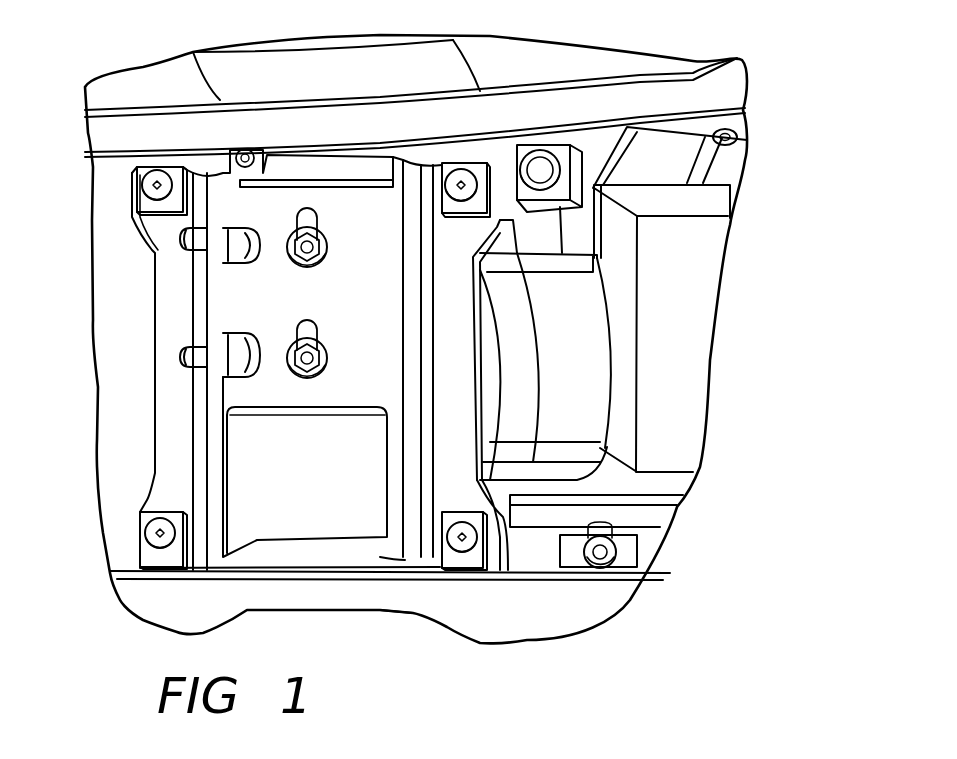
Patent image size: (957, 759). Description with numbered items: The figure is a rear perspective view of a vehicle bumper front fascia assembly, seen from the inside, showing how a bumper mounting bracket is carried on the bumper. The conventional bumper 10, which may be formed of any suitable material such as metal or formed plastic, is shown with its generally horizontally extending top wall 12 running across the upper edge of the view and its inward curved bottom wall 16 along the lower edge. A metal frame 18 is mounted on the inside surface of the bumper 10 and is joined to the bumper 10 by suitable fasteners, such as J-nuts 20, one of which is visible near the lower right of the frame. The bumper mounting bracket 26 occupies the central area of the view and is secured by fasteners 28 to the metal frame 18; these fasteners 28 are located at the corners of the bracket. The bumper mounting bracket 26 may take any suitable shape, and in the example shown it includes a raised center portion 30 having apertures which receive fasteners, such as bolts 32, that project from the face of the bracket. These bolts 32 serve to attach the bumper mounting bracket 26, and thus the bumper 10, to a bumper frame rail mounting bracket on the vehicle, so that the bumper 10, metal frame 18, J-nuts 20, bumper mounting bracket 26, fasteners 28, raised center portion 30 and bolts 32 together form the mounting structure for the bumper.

The bumper 10 is at (221, 101).
The top wall 12 is at (645, 63).
The bottom wall 16 is at (533, 617).
The metal frame 18 is at (737, 132).
The J-nuts 20 is at (593, 575).
The bumper mounting bracket 26 is at (361, 209).
The fasteners 28 is at (457, 537).
The raised center portion 30 is at (347, 393).
The bolts 32 is at (325, 358).